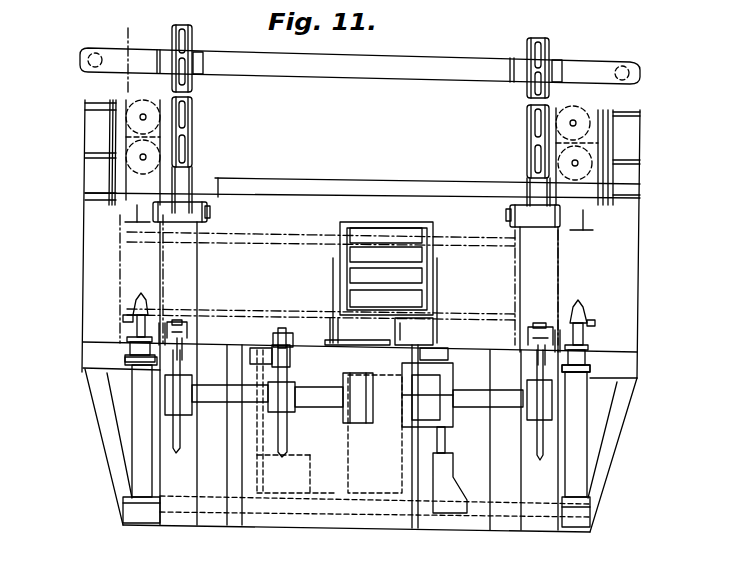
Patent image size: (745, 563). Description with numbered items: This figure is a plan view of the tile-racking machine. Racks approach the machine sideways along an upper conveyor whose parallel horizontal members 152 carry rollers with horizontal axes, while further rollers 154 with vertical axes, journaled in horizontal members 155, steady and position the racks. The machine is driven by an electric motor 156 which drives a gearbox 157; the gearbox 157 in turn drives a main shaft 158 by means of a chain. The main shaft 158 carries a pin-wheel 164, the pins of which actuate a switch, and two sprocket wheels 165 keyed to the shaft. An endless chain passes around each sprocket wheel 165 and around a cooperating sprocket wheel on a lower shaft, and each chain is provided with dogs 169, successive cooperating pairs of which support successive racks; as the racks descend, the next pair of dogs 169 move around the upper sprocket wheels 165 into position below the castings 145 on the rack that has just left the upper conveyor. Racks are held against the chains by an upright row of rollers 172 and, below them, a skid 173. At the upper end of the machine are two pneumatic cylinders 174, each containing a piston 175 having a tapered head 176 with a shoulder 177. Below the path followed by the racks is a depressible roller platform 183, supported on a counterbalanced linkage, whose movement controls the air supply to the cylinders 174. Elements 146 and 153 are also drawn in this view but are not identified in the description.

The castings 145 is at (376, 290).
The support rod 146 is at (173, 320).
The parallel horizontal members 152 is at (531, 125).
The chain guide 153 is at (190, 38).
The rollers 154 is at (160, 118).
The horizontal members 155 is at (120, 127).
The electric motor 156 is at (322, 390).
The gearbox 157 is at (372, 472).
The main shaft 158 is at (310, 455).
The pin-wheel 164 is at (284, 335).
The sprocket wheels 165 is at (181, 432).
The dogs 169 is at (188, 330).
The rollers 172 is at (207, 214).
The skid 173 is at (339, 373).
The pneumatic cylinders 174 is at (142, 477).
The piston 175 is at (125, 345).
The tapered head 176 is at (143, 293).
The shoulder 177 is at (150, 315).
The depressible roller platform 183 is at (408, 257).